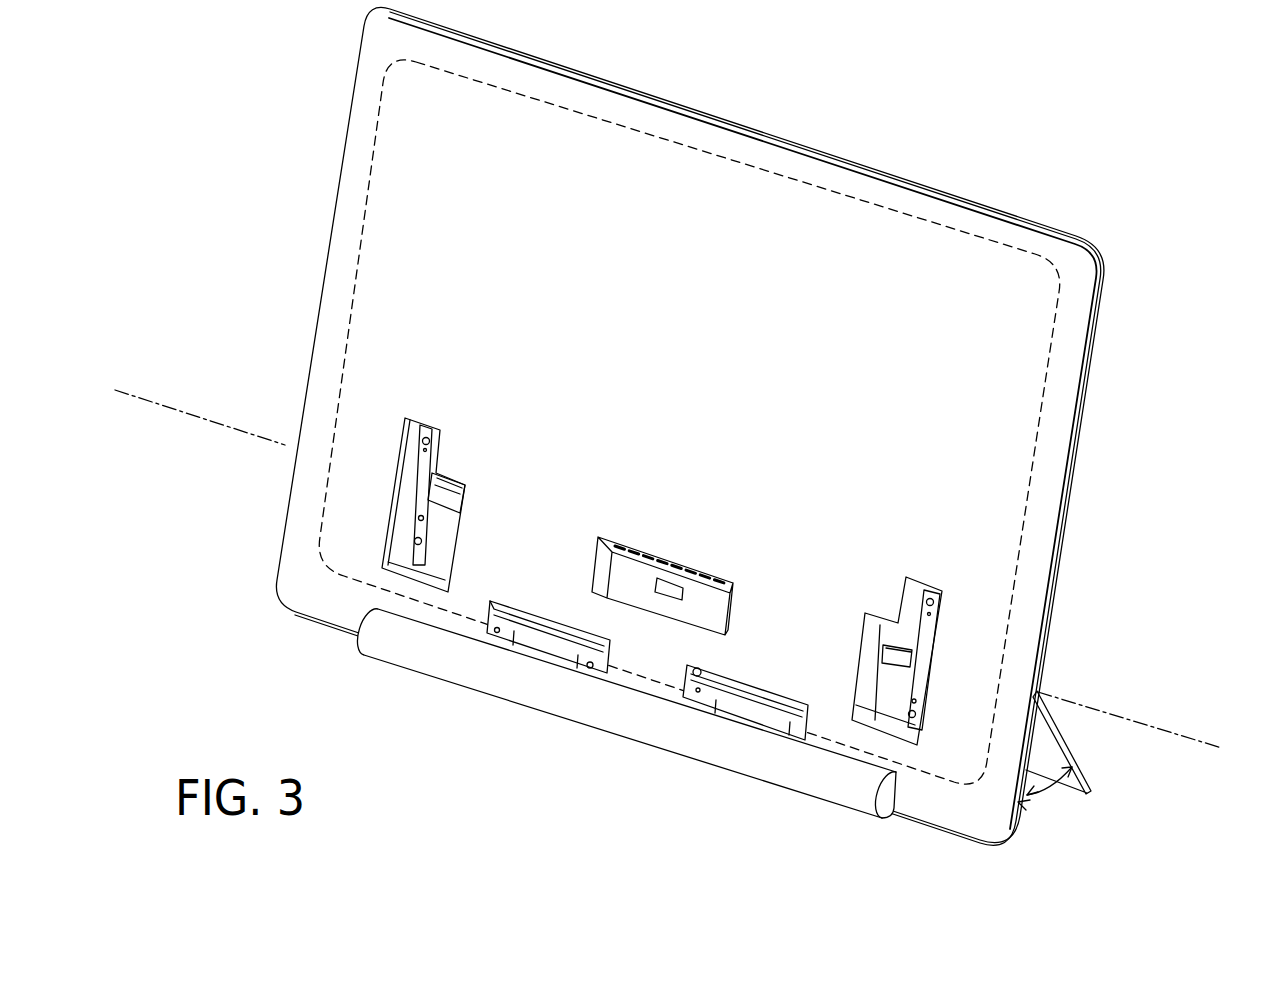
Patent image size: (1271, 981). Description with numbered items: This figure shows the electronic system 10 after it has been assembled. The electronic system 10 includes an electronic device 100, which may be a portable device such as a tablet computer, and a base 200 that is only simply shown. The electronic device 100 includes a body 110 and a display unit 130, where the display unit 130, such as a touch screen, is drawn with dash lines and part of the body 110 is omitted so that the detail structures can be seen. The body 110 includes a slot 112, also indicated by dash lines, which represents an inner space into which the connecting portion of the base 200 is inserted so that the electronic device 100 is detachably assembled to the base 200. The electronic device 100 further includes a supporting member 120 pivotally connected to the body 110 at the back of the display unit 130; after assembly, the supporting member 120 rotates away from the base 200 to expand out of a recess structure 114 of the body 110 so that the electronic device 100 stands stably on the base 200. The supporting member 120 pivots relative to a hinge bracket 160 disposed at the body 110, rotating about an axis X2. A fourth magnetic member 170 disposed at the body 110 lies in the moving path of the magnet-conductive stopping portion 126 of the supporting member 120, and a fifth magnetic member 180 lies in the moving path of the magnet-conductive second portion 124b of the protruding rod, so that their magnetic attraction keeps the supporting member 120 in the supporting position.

The electronic system 10 is at (1258, 104).
The electronic device 100 is at (1222, 152).
The body 110 is at (745, 124).
The slot 112 is at (547, 640).
The recess structure 114 is at (1020, 803).
The supporting member 120 is at (1077, 752).
The second portion of the protruding rod 124b is at (402, 502).
The stopping portion 126 is at (643, 546).
The display unit 130 is at (820, 187).
The hinge bracket 160 is at (418, 457).
The fourth magnetic member 170 is at (668, 600).
The fifth magnetic member 180 is at (438, 510).
The base 200 is at (630, 722).
The axis X2 is at (1130, 713).